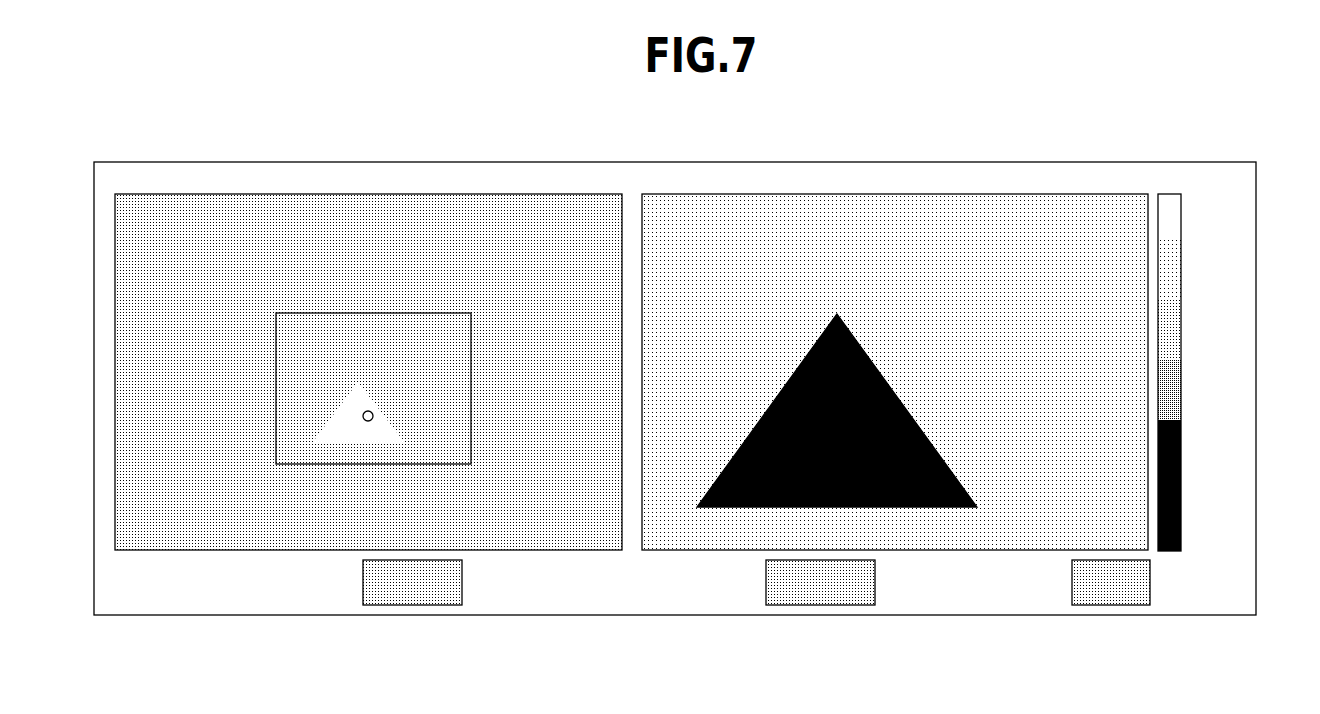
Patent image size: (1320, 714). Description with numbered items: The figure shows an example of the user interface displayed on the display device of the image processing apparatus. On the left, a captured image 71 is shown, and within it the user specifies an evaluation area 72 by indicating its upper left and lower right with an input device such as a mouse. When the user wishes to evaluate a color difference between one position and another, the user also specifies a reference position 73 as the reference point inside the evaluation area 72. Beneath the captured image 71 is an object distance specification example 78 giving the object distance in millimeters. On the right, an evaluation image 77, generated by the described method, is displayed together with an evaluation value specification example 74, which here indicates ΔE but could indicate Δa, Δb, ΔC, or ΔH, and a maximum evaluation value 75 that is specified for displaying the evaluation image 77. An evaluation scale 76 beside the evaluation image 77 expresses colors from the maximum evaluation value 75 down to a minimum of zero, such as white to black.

The captured image 71 is at (540, 530).
The evaluation area 72 is at (471, 388).
The reference position 73 is at (369, 410).
The evaluation value specification example 74 is at (855, 598).
The maximum evaluation value 75 is at (1136, 598).
The evaluation scale 76 is at (1174, 405).
The evaluation image 77 is at (988, 232).
The object distance specification example 78 is at (445, 598).